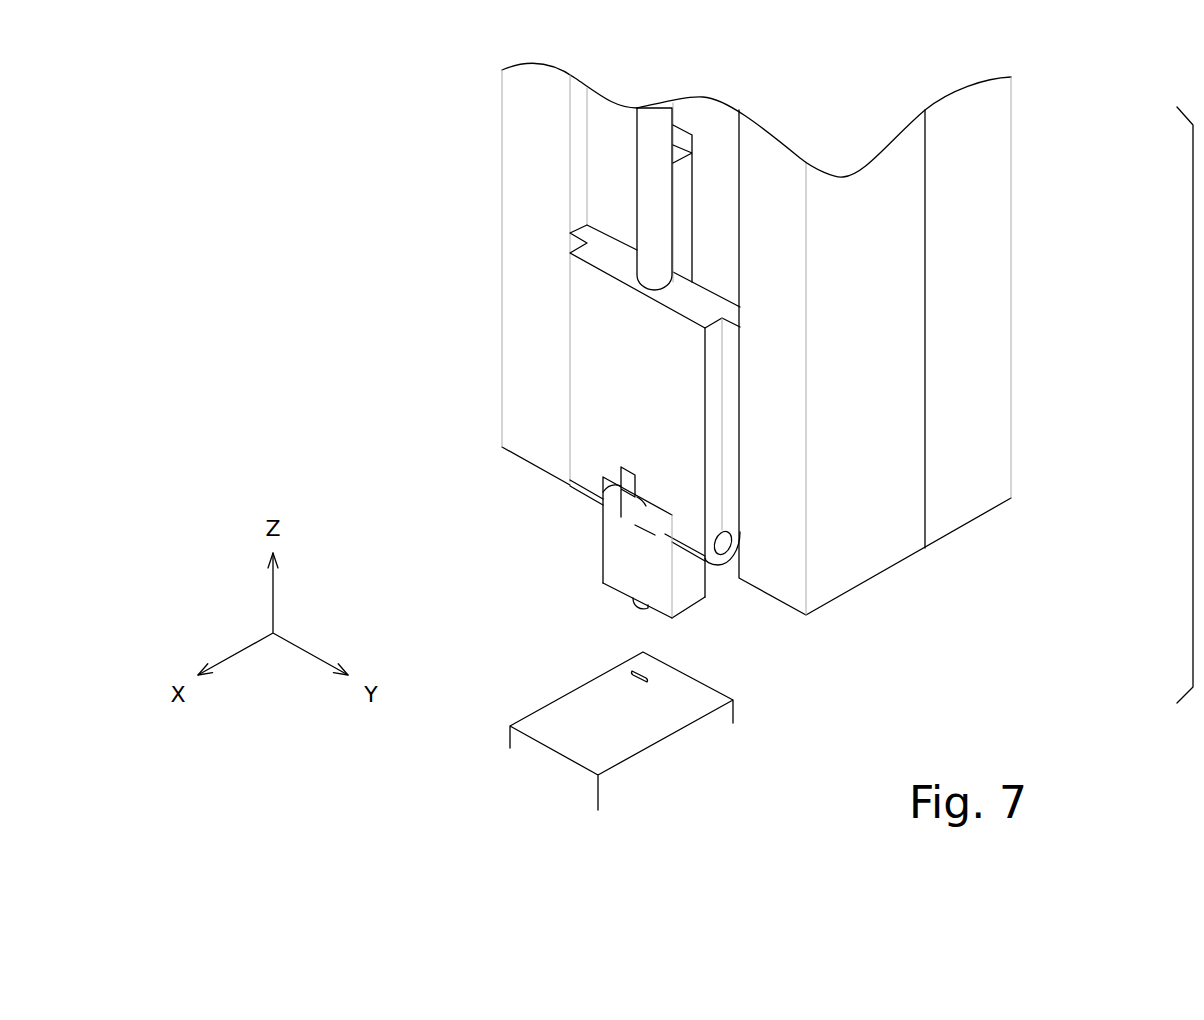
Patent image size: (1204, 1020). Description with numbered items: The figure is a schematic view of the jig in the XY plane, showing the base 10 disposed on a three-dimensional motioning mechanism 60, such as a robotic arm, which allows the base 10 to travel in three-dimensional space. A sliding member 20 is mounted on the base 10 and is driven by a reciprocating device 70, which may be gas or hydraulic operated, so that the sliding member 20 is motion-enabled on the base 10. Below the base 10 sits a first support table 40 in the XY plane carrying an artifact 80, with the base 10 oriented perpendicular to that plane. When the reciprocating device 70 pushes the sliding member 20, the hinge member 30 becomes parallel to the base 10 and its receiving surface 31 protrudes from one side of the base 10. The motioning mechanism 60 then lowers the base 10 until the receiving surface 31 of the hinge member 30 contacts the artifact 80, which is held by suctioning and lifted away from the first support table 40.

The base 10 is at (867, 560).
The sliding member 20 is at (598, 325).
The hinge member 30 is at (610, 544).
The receiving surface 31 is at (617, 590).
The first support table 40 is at (543, 723).
The motioning mechanism 60 is at (988, 339).
The reciprocating device 70 is at (648, 185).
The artifact 80 is at (633, 670).